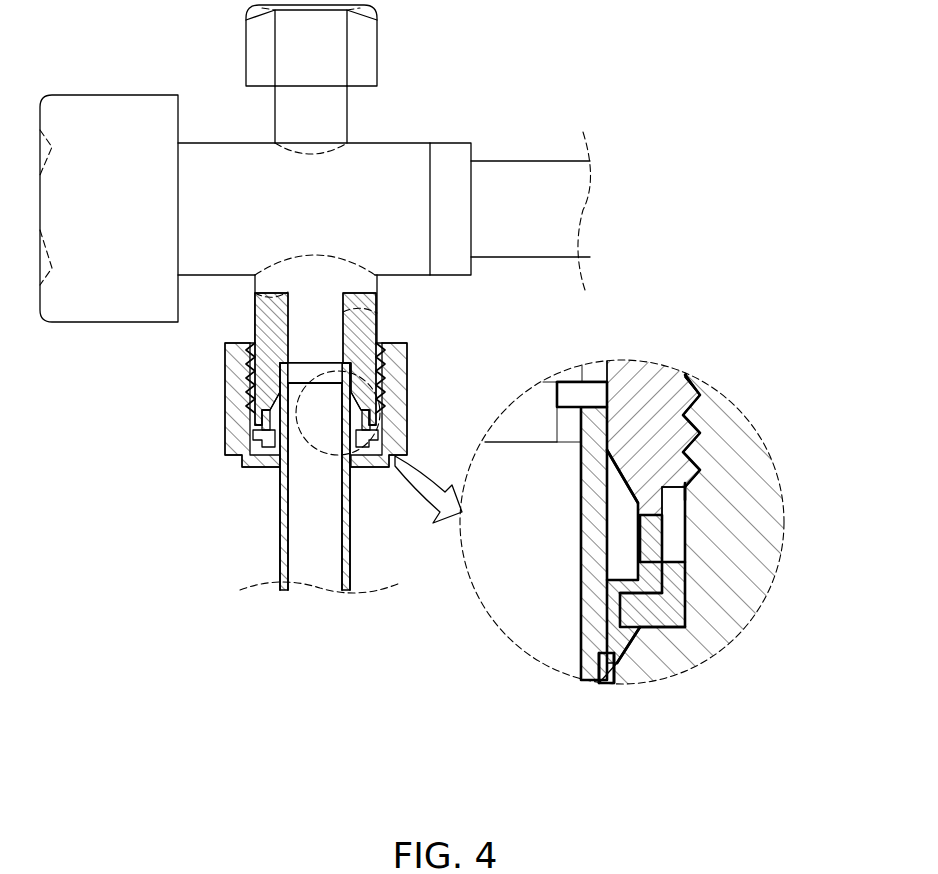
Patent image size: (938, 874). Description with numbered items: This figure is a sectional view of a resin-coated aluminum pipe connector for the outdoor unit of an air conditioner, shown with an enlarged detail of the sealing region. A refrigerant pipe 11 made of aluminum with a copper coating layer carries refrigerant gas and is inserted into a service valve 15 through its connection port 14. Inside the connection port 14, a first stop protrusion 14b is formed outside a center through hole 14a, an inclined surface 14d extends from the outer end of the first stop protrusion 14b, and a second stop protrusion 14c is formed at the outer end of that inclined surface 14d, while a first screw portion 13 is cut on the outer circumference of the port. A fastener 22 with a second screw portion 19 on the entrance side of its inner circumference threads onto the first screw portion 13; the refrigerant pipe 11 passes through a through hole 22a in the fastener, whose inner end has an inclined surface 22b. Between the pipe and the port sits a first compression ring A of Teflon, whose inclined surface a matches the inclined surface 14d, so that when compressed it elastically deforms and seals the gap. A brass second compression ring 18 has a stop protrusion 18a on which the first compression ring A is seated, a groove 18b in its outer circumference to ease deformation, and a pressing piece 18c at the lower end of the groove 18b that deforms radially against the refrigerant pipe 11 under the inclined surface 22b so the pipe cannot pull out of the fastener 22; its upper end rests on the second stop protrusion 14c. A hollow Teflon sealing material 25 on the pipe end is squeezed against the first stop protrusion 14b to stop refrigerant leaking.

The service valve 15 is at (436, 106).
The connection port 14 is at (358, 292).
The center through hole 14a is at (508, 473).
The first stop protrusion 14b is at (620, 385).
The second stop protrusion 14c is at (685, 538).
The inclined surface 14d is at (690, 484).
The inclined surface a is at (692, 392).
The first screw portion 13 is at (257, 328).
The second screw portion 19 is at (250, 395).
The fastener 22 is at (240, 425).
The through hole 22a is at (612, 688).
The inclined surface 22b is at (598, 685).
The second compression ring 18 is at (255, 458).
The stop protrusion 18a is at (593, 623).
The groove 18b is at (640, 635).
The pressing piece 18c is at (603, 657).
The refrigerant pipe 11 is at (285, 548).
The sealing material 25 is at (570, 393).
The first compression ring A is at (617, 538).